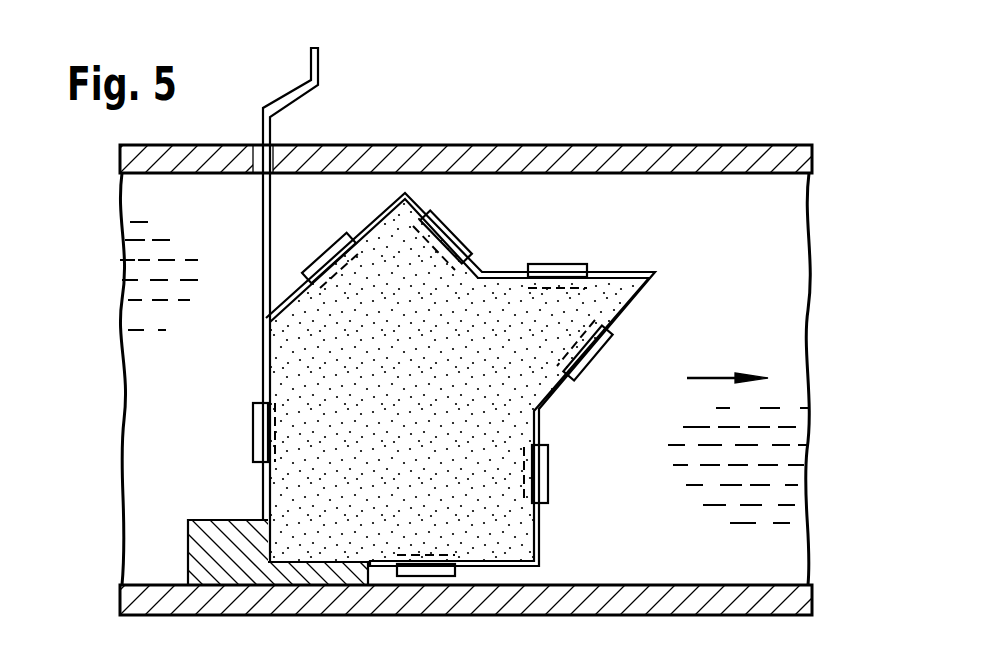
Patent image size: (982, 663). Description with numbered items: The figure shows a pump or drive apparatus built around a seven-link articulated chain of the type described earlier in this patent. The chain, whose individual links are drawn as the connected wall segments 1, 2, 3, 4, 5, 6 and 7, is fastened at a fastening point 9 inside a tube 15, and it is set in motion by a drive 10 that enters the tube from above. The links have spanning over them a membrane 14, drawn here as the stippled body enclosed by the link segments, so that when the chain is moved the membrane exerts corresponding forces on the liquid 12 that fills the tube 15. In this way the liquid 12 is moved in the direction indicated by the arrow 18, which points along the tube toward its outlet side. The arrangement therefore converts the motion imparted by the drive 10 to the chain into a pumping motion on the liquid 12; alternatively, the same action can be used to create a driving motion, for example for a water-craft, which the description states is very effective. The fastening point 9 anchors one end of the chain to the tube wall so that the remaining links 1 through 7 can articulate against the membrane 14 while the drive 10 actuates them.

The housing body 1 is at (377, 218).
The top wall plate 2 is at (497, 275).
The inclined wall plate 3 is at (647, 298).
The side wall plate 4 is at (538, 424).
The bottom wall plate 5 is at (538, 558).
The transducer elements 6 is at (263, 492).
The inclined front wall 7 is at (293, 292).
The fastening point 9 is at (202, 533).
The drive 10 is at (285, 98).
The liquid 12 is at (770, 455).
The membrane 14 is at (322, 367).
The tube 15 is at (623, 600).
The arrow 18 is at (712, 378).